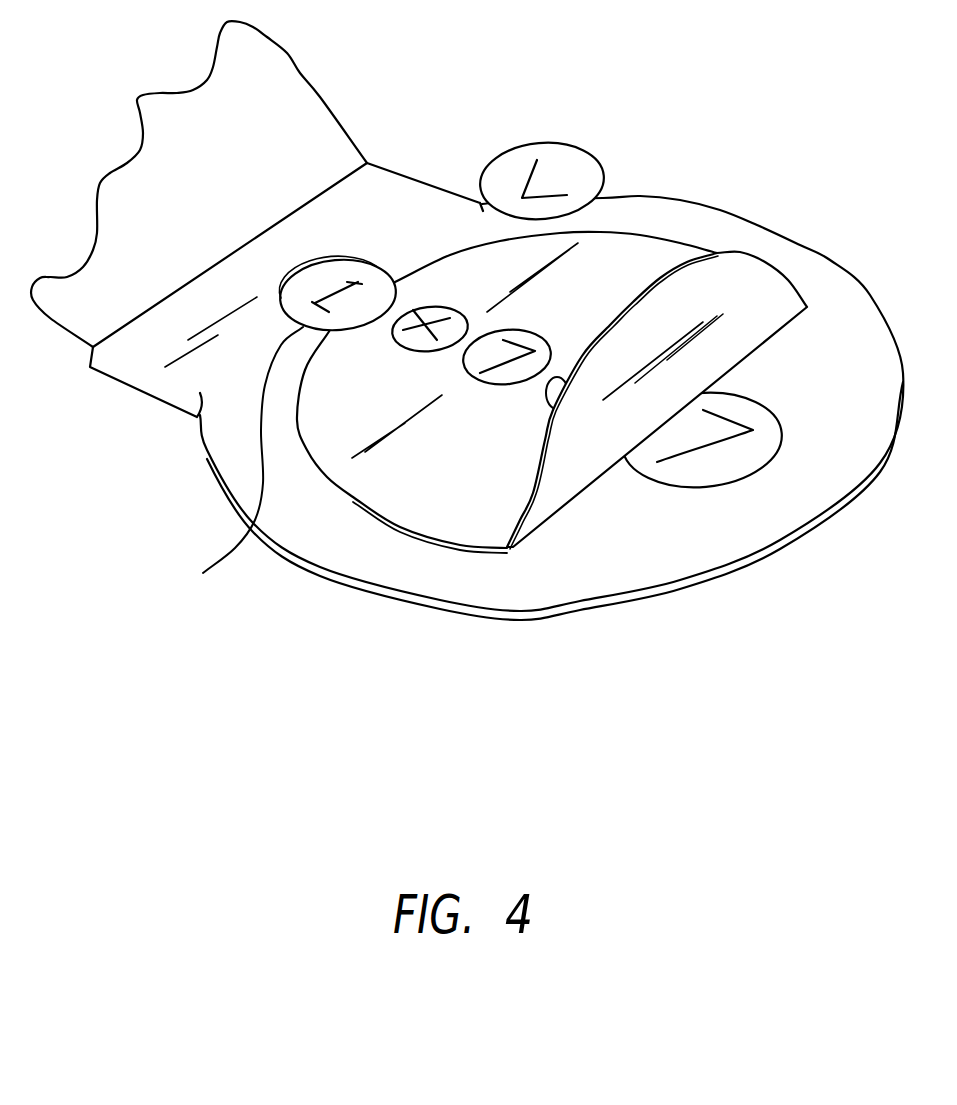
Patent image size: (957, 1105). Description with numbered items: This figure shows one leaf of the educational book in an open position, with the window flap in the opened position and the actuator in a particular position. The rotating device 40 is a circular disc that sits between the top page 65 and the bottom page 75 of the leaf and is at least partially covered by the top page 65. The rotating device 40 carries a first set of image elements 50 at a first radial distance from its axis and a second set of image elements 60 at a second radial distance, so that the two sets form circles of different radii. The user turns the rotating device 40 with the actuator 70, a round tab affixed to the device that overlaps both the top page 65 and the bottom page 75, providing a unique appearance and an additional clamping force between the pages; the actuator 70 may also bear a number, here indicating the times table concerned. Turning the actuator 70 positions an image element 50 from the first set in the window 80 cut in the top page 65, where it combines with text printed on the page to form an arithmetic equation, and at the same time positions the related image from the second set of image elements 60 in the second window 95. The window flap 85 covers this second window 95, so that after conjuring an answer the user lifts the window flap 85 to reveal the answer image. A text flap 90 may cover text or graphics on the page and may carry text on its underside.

The rotating device 40 is at (318, 284).
The first set of image elements 50 is at (352, 282).
The second set of image elements 60 is at (693, 468).
The top page 65 is at (667, 200).
The actuator 70 is at (564, 158).
The bottom page 75 is at (752, 563).
The window 80 is at (236, 461).
The window flap 85 is at (535, 453).
The text flap 90 is at (417, 502).
The second window 95 is at (712, 489).